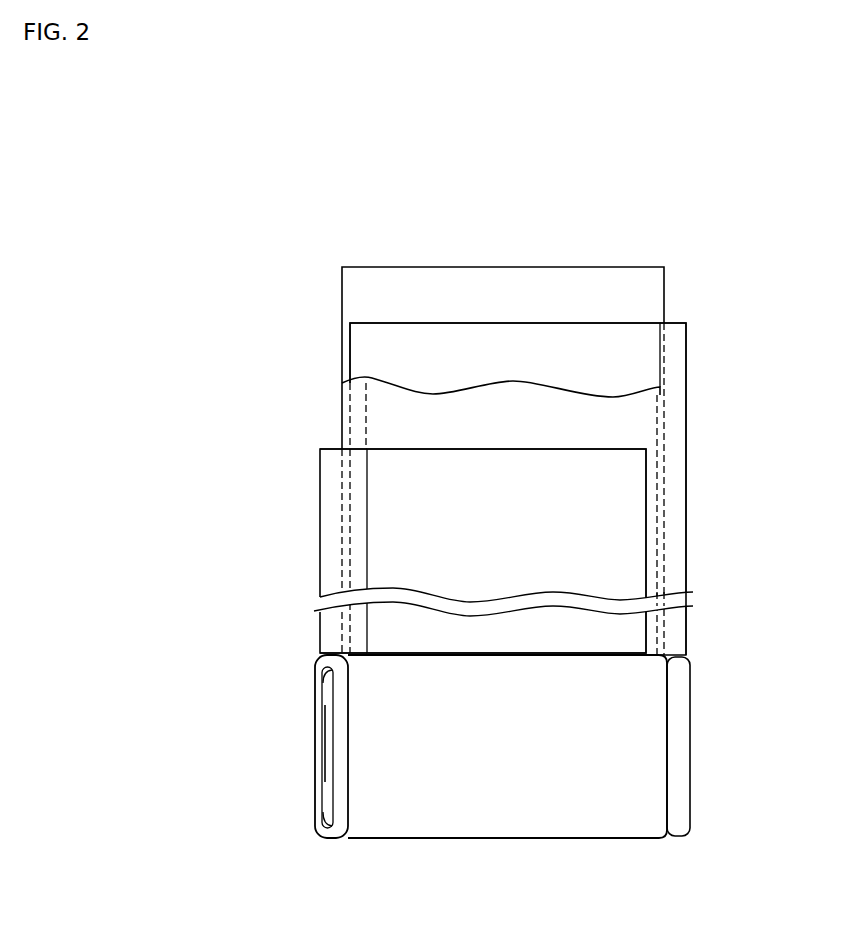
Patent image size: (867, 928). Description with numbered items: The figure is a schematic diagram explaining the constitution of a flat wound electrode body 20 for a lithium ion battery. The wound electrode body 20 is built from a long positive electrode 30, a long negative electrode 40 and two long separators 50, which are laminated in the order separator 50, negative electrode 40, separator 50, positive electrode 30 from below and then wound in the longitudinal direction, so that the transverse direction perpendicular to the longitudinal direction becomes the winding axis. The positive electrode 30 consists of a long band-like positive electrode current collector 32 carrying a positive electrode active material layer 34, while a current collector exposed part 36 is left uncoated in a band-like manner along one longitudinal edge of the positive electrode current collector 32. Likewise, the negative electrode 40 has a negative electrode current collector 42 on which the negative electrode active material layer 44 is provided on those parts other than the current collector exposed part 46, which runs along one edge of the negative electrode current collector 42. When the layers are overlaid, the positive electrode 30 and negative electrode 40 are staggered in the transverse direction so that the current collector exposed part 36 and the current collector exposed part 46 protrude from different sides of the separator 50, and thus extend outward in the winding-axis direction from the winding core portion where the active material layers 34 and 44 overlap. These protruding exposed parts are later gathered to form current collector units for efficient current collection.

The wound electrode body 20 is at (563, 818).
The positive electrode 30 is at (416, 551).
The positive electrode current collector 32 is at (416, 551).
The positive electrode active material layer 34 is at (383, 565).
The current collector exposed part 36 is at (333, 528).
The negative electrode 40 is at (586, 485).
The negative electrode current collector 42 is at (586, 489).
The negative electrode active material layer 44 is at (630, 349).
The current collector exposed part 46 is at (675, 499).
The separator 50 is at (357, 284).